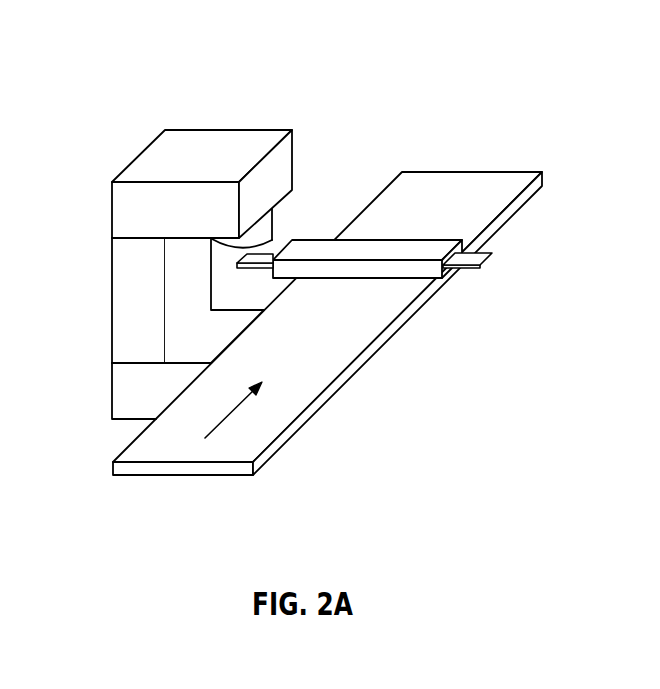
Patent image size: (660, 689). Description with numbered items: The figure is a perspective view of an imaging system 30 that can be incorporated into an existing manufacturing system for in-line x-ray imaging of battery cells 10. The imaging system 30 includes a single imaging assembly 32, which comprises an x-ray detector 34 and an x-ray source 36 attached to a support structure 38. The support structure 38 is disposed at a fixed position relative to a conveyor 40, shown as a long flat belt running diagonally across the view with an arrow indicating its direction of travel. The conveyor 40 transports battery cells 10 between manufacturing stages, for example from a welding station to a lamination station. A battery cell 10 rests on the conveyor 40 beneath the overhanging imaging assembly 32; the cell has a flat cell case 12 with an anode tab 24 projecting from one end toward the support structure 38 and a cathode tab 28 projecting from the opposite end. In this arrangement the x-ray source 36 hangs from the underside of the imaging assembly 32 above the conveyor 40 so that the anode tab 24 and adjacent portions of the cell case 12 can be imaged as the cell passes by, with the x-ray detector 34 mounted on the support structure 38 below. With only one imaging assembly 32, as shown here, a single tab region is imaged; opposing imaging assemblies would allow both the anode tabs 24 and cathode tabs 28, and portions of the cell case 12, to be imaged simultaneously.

The battery cell 10 is at (308, 239).
The cell case 12 is at (410, 270).
The anode tab 24 is at (262, 258).
The cathode tab 28 is at (478, 258).
The imaging system 30 is at (203, 233).
The imaging assembly 32 is at (108, 210).
The x-ray detector 34 is at (200, 343).
The x-ray source 36 is at (265, 228).
The support structure 38 is at (128, 302).
The conveyor 40 is at (330, 352).